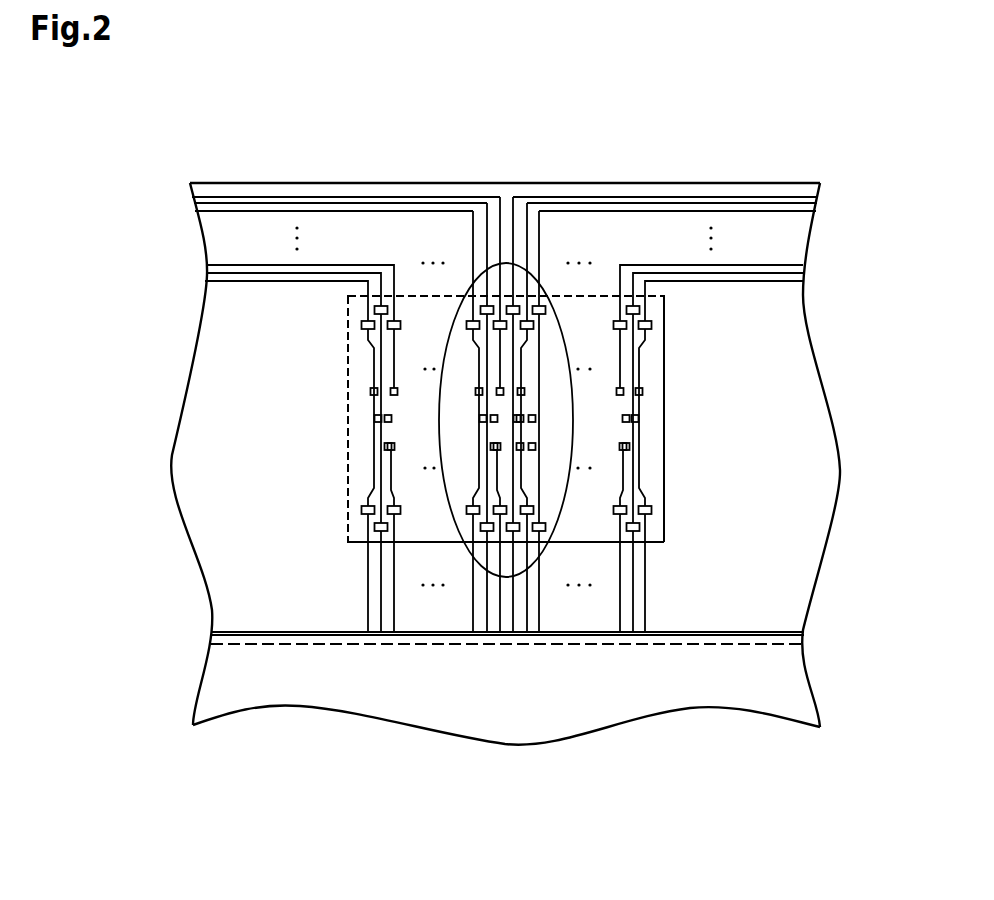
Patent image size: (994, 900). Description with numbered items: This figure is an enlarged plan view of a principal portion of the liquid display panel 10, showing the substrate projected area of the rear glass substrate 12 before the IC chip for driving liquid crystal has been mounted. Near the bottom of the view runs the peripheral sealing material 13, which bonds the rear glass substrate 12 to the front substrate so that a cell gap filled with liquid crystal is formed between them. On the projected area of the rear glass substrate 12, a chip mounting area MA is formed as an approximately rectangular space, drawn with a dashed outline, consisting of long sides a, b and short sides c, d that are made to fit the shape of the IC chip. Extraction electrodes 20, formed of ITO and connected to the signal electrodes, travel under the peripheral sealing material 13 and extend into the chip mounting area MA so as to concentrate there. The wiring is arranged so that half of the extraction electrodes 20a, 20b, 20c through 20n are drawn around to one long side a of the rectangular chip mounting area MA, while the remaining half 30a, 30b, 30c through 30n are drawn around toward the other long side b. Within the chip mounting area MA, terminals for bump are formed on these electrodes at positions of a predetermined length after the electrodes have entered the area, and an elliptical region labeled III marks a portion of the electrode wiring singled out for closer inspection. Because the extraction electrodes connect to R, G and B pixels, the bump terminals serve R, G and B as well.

The liquid display panel 10 is at (260, 84).
The rear glass substrate 12 is at (797, 352).
The peripheral sealing material 13 is at (797, 677).
The extraction electrodes 20 is at (363, 583).
The extraction electrode 20a is at (368, 633).
The extraction electrode 20b is at (381, 633).
The extraction electrode 20c is at (394, 633).
The extraction electrode 20n is at (647, 633).
The extraction electrode 30a is at (243, 282).
The extraction electrode 30b is at (208, 274).
The extraction electrode 30c is at (208, 265).
The extraction electrode 30n is at (803, 290).
The chip mounting area MA is at (366, 366).
The long side a is at (652, 545).
The long side b is at (656, 292).
The short side c is at (348, 453).
The short side d is at (665, 440).
The section III region III is at (540, 555).